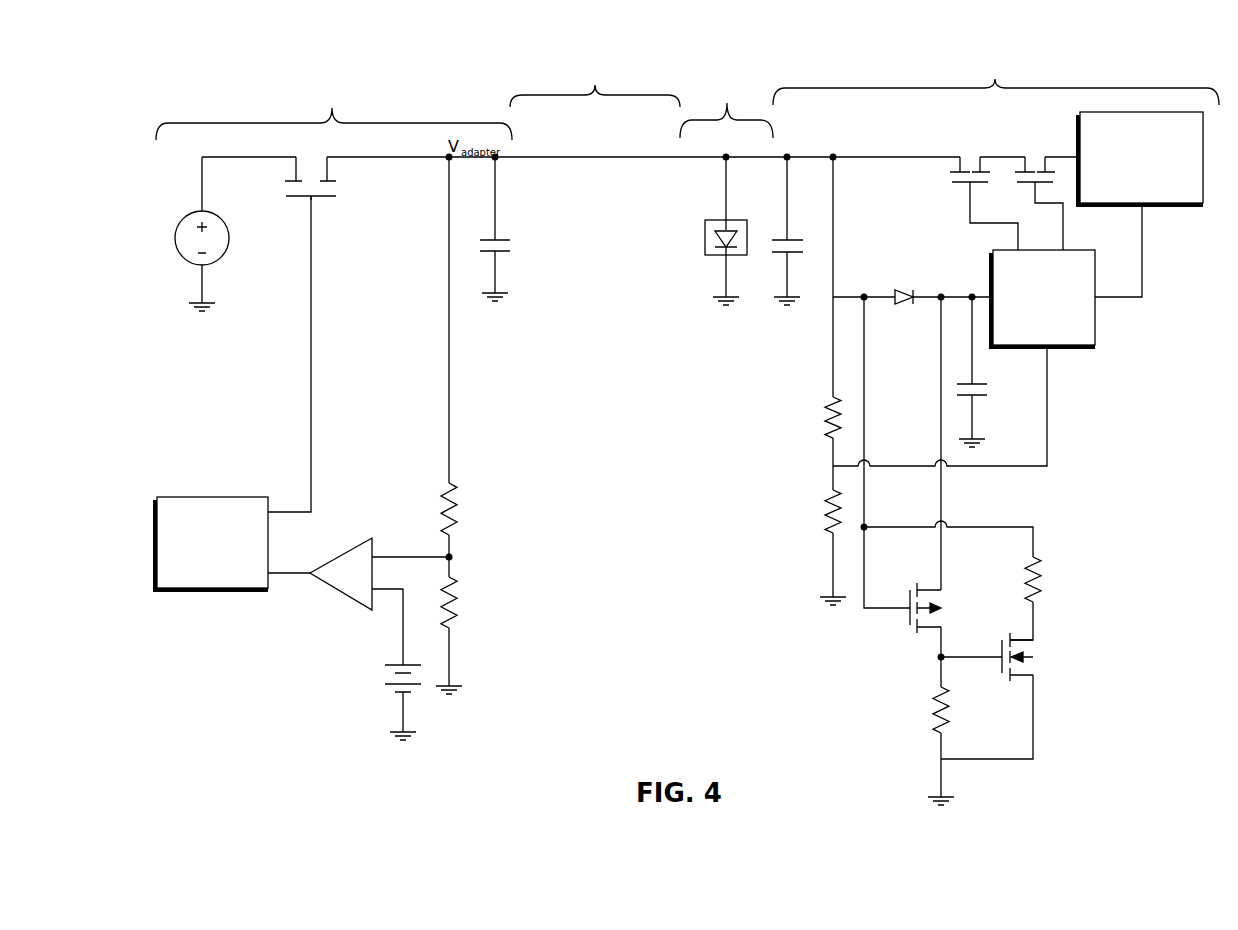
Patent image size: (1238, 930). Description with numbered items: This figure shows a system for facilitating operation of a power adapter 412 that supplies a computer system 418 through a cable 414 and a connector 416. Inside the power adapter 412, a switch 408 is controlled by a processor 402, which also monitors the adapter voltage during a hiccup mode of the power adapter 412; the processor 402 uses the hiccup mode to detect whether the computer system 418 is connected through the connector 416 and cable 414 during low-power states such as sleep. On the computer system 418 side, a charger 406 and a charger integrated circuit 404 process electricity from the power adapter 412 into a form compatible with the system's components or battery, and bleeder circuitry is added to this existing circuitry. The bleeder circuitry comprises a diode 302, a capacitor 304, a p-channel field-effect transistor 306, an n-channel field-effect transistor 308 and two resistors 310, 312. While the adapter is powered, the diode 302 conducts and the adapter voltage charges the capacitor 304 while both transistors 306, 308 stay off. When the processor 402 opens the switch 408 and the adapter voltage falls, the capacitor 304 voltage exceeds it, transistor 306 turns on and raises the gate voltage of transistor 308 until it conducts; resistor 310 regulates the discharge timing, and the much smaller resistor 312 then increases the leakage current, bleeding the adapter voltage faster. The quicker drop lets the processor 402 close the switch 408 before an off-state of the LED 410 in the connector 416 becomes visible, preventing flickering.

The diode 302 is at (904, 285).
The capacitor 304 is at (991, 372).
The p-channel field-effect transistor 306 is at (946, 608).
The n-channel field-effect transistor 308 is at (1038, 657).
The resistor 310 is at (923, 710).
The resistor 312 is at (1053, 579).
The processor 402 is at (211, 543).
The charger integrated circuit 404 is at (1043, 298).
The charger 406 is at (1140, 158).
The switch 408 is at (331, 178).
The LED 410 is at (709, 231).
The power adapter 412 is at (334, 97).
The cable 414 is at (595, 68).
The connector 416 is at (726, 94).
The computer system 418 is at (996, 65).